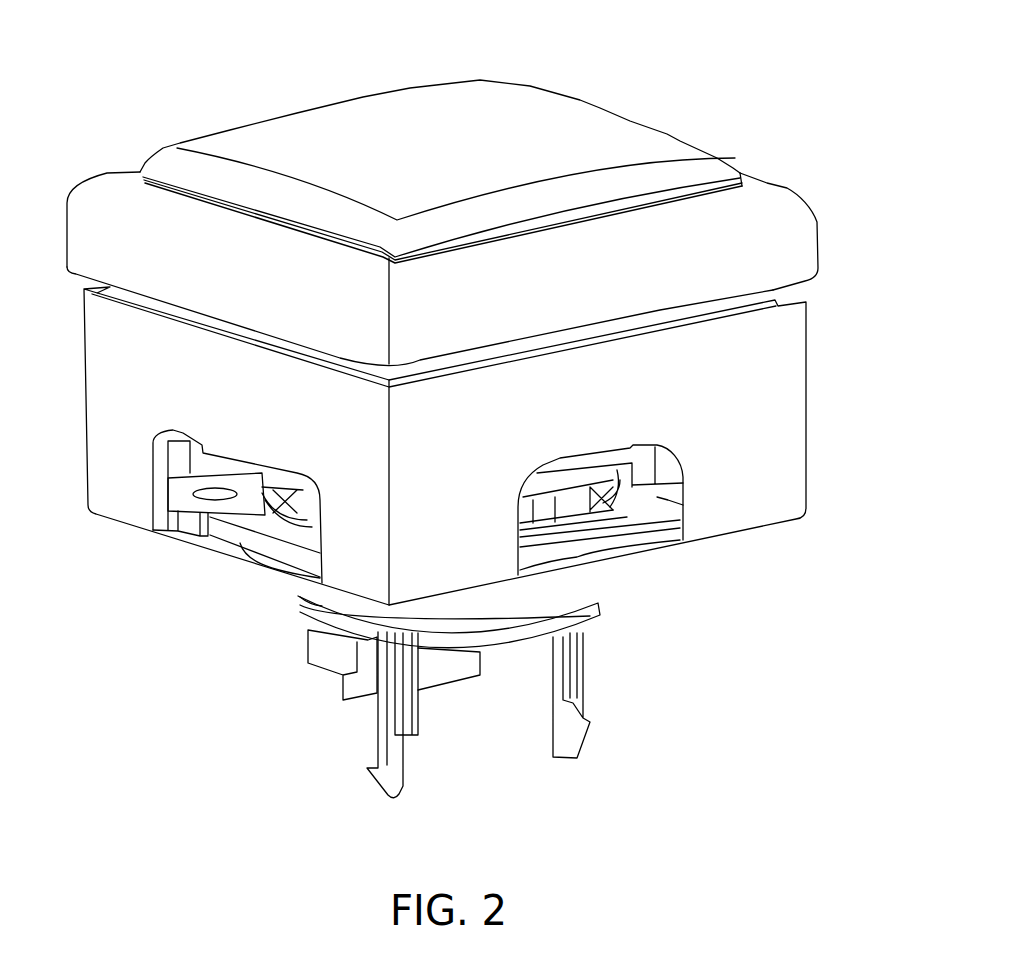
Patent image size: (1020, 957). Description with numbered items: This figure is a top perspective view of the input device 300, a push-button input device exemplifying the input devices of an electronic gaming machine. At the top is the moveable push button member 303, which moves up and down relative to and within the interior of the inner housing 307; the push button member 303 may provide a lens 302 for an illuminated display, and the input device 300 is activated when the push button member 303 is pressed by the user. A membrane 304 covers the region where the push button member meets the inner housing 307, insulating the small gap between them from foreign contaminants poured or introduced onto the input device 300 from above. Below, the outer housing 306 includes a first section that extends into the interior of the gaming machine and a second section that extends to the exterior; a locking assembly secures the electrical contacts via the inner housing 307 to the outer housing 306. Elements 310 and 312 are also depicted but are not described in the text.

The input device 300 is at (691, 84).
The lens 302 is at (706, 172).
The push button member 303 is at (376, 117).
The membrane 304 is at (97, 210).
The outer housing 306 is at (777, 353).
The inner housing 307 is at (622, 470).
The base flange 310 is at (323, 600).
The terminal pin 312 is at (577, 732).